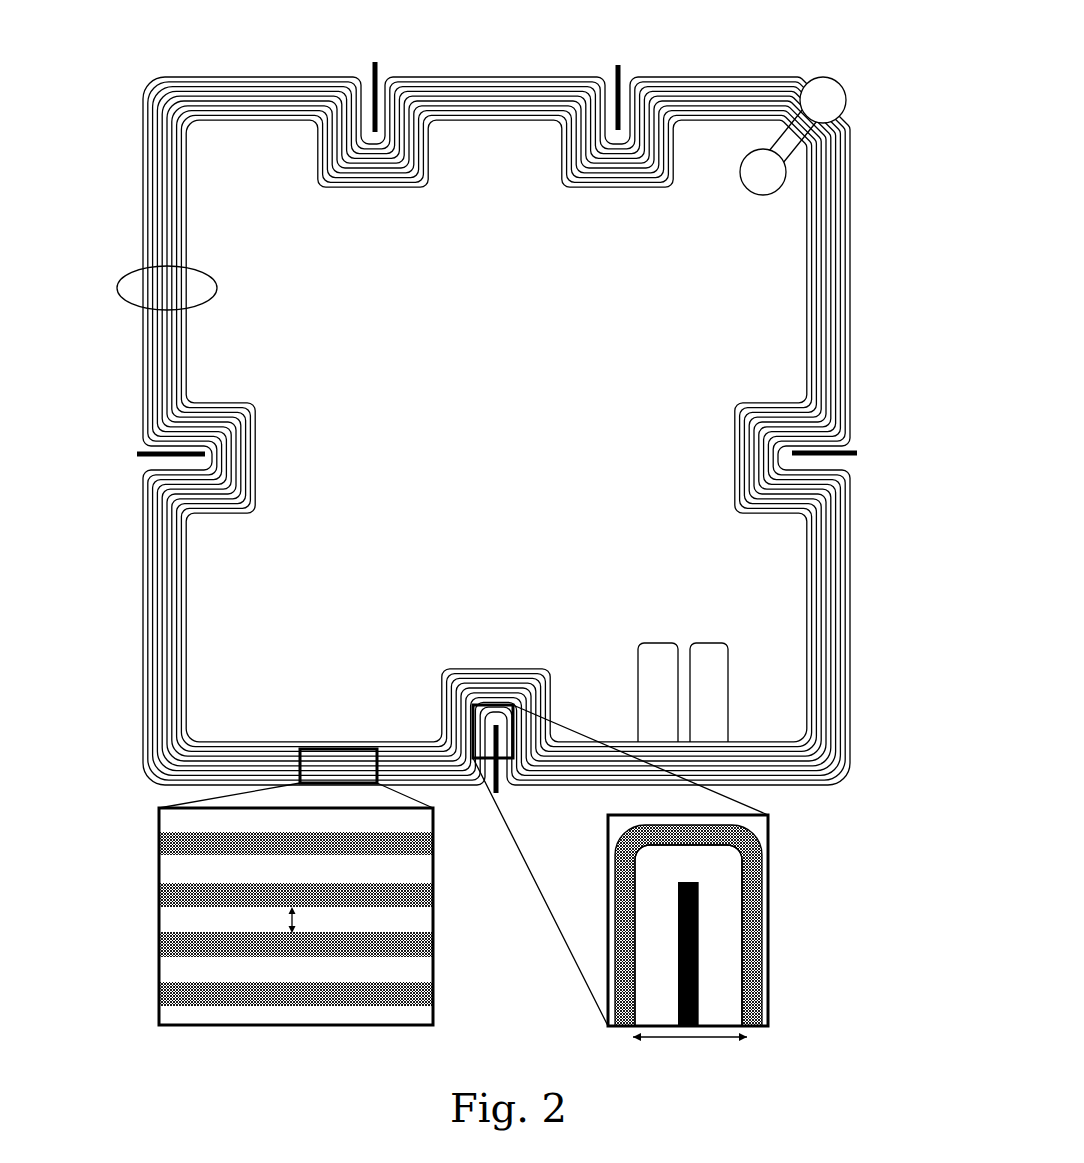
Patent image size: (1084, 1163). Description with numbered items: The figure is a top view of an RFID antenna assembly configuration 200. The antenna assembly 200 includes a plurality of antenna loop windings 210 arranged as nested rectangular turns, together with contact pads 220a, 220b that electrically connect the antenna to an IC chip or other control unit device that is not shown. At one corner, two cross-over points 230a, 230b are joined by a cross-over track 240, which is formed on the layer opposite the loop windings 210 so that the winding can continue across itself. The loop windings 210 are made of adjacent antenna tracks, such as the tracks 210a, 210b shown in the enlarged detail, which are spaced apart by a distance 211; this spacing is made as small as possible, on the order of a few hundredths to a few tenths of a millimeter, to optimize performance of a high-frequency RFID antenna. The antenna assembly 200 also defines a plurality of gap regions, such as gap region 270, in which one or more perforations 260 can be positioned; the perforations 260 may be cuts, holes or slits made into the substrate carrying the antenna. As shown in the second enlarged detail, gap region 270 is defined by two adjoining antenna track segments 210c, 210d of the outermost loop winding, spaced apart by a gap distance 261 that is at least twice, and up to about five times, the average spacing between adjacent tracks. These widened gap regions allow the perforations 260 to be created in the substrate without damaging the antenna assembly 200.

The RFID antenna assembly configuration 200 is at (515, 29).
The antenna loop windings 210 is at (220, 286).
The antenna track 210a is at (435, 893).
The antenna track 210b is at (435, 945).
The antenna track segment 210c is at (640, 893).
The antenna track segment 210d is at (766, 890).
The distance 211 is at (302, 919).
The contact pad 220a is at (645, 642).
The contact pad 220b is at (712, 642).
The cross-over point 230a is at (747, 189).
The cross-over point 230b is at (842, 66).
The cross-over track 240 is at (768, 147).
The perforations 260 is at (378, 66).
The gap distance 261 is at (678, 1048).
The gap region 270 is at (720, 953).